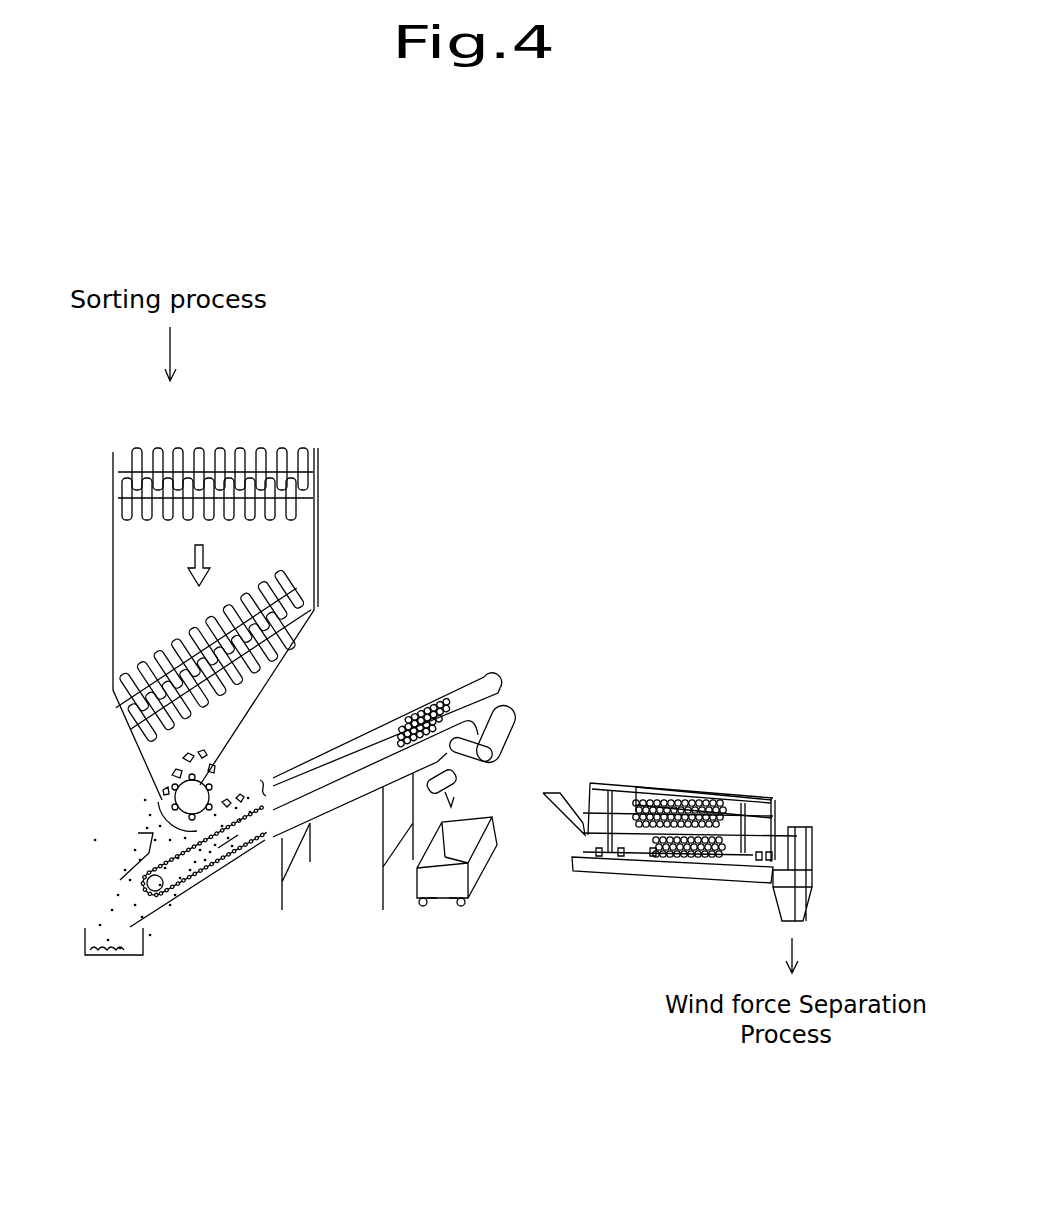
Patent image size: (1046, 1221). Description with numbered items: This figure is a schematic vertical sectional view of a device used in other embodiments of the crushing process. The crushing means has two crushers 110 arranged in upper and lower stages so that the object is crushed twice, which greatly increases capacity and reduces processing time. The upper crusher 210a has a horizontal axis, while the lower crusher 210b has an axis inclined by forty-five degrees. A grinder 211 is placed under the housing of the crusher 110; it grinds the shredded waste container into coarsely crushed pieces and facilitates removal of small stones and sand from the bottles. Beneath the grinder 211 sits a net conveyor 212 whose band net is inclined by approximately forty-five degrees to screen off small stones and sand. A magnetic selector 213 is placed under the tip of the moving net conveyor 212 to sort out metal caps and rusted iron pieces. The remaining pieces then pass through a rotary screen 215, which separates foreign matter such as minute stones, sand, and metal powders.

The crusher 110 is at (320, 572).
The upper crusher 210a is at (222, 448).
The lower crusher 210b is at (297, 643).
The grinder 211 is at (193, 802).
The net conveyor 212 is at (356, 743).
The magnetic selector 213 is at (518, 717).
The rotary screen 215 is at (703, 807).